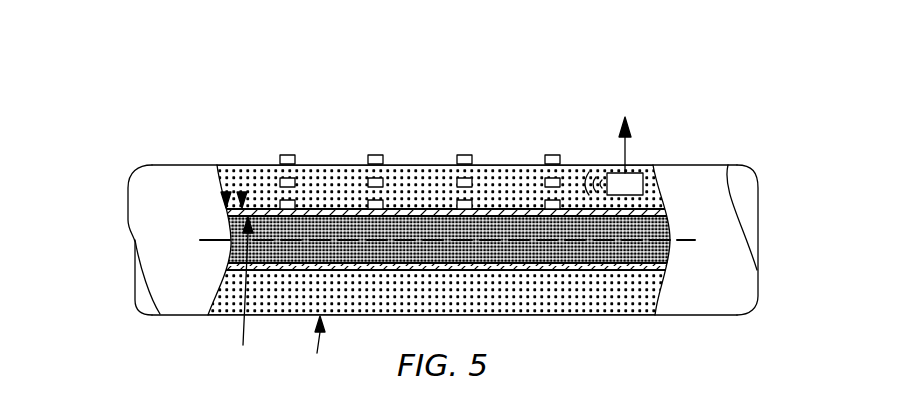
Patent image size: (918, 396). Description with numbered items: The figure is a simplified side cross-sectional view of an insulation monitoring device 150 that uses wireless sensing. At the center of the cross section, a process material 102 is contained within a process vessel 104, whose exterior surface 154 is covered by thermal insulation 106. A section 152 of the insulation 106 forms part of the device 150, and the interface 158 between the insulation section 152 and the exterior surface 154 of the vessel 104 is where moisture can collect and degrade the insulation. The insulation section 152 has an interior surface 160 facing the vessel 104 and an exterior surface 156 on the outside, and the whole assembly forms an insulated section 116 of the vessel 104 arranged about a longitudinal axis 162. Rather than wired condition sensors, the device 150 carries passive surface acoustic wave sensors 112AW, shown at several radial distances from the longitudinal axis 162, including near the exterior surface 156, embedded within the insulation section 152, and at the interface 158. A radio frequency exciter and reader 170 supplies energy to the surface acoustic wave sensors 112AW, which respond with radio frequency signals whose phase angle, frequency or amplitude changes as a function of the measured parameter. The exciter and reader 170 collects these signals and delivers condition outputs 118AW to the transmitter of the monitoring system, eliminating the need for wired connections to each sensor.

The process material 102 is at (229, 253).
The process vessel 104 is at (222, 213).
The thermal insulation 106 is at (220, 298).
The surface acoustic wave sensors 112AW is at (288, 155).
The insulated section 116 is at (133, 62).
The condition outputs 118AW is at (622, 148).
The insulation monitoring device 150 is at (726, 102).
The insulation section 152 is at (221, 318).
The exterior surface of the process vessel 154 is at (226, 192).
The exterior surface of the insulation section 156 is at (316, 348).
The interface 158 is at (242, 192).
The interior surface of the insulation section 160 is at (240, 295).
The longitudinal axis 162 is at (681, 238).
The radio frequency exciter and reader 170 is at (637, 177).